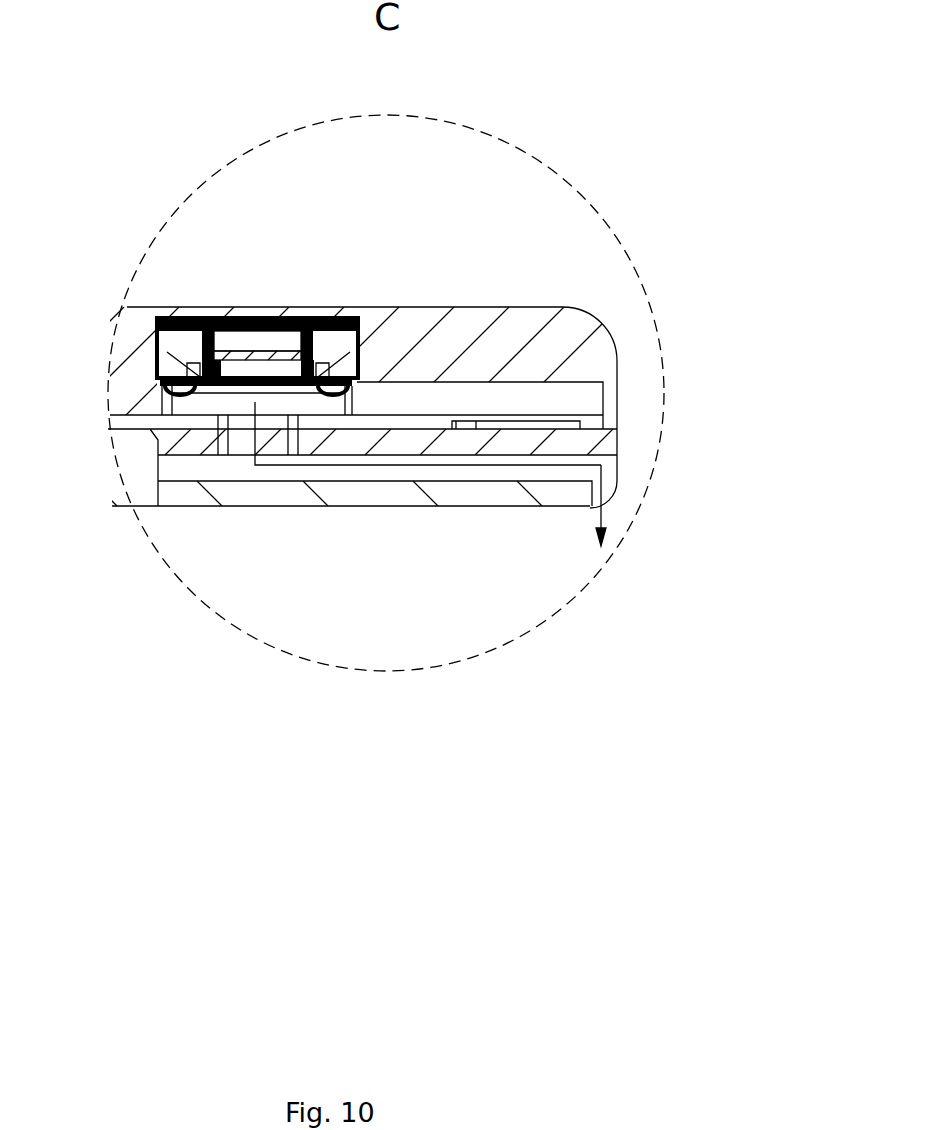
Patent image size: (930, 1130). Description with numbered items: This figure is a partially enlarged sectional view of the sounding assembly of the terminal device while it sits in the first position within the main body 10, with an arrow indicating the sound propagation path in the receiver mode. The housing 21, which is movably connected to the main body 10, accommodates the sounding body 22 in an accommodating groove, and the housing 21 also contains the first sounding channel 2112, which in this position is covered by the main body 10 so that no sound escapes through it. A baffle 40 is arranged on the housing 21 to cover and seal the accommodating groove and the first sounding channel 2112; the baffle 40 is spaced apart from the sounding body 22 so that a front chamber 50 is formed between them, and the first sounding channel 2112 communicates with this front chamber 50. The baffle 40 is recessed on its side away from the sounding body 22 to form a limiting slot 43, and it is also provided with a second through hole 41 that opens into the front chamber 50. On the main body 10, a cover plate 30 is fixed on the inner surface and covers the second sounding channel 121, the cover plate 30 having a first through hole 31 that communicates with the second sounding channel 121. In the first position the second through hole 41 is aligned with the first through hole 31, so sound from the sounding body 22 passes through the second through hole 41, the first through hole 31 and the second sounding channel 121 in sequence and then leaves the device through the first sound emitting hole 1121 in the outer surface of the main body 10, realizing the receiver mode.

The main body 10 is at (400, 493).
The second sounding channel 121 is at (310, 473).
The first sound emitting hole 1121 is at (605, 490).
The housing 21 is at (462, 333).
The first sounding channel 2112 is at (473, 400).
The sounding body 22 is at (257, 332).
The cover plate 30 is at (195, 455).
The first through hole 31 is at (252, 442).
The baffle 40 is at (170, 427).
The second through hole 41 is at (240, 430).
The limiting slot 43 is at (528, 425).
The front chamber 50 is at (242, 403).